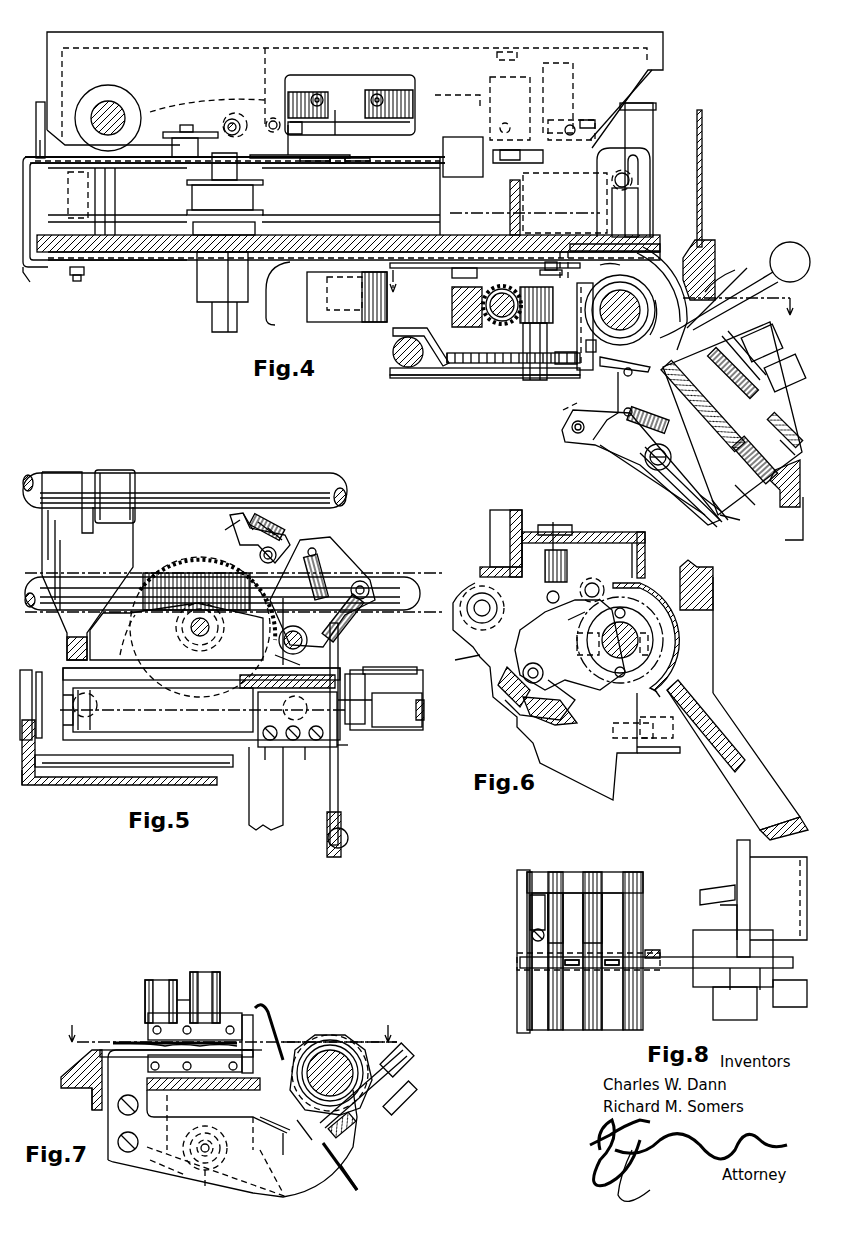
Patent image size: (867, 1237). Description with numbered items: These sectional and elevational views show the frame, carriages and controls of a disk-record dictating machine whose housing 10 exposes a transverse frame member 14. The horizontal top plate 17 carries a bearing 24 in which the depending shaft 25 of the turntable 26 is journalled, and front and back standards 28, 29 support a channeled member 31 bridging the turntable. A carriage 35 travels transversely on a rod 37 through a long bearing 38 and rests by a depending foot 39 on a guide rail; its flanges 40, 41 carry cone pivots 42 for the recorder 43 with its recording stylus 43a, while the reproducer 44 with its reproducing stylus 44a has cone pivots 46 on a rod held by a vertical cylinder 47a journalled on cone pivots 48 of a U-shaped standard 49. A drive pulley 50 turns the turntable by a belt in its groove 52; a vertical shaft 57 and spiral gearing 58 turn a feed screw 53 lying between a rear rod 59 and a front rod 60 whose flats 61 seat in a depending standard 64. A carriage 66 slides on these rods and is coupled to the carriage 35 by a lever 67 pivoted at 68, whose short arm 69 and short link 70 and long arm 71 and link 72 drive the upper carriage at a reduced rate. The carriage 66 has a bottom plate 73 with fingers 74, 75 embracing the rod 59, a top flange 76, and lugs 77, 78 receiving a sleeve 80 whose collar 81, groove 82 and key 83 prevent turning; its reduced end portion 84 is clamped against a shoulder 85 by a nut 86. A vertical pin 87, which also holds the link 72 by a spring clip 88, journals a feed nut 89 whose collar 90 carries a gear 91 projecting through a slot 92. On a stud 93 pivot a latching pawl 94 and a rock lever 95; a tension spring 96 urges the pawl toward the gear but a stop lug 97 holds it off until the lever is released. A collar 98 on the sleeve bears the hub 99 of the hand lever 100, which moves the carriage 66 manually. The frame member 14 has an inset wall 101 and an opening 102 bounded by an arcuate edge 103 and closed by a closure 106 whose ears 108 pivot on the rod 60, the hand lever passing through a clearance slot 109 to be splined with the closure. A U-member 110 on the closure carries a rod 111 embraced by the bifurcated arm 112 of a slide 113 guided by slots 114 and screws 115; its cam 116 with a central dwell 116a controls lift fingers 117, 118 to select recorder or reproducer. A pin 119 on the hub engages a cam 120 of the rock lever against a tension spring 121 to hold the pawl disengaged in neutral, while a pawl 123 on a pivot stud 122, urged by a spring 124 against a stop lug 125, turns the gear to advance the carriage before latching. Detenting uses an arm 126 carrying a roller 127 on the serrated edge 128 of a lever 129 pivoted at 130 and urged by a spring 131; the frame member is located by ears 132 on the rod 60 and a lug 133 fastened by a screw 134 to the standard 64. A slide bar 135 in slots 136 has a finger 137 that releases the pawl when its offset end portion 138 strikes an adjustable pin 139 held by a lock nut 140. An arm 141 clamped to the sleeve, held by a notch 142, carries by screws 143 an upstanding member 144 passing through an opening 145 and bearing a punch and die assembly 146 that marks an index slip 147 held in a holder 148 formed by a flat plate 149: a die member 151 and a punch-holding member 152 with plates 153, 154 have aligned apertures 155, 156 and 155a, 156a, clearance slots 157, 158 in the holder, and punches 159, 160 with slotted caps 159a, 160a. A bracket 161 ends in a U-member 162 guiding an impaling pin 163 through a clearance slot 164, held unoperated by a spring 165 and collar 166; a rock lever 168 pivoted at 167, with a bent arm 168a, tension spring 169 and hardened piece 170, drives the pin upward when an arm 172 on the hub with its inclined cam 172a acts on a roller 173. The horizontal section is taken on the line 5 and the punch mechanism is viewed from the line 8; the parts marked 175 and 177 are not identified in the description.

In FIG. 4, the housing 10 is at (707, 146).
In FIG. 4, the transverse frame member 14 is at (705, 239).
In FIG. 6, the transverse frame member 14 is at (722, 579).
In FIG. 7, the transverse frame member 14 is at (63, 1077).
In FIG. 4, the top plate 17 is at (179, 260).
In FIG. 6, the top plate 17 is at (496, 508).
In FIG. 4, the bearing 24 is at (307, 305).
In FIG. 4, the depending shaft 25 is at (327, 282).
In FIG. 4, the turntable 26 is at (166, 222).
In FIG. 4, the front standard 28 is at (648, 118).
In FIG. 4, the back standard 29 is at (29, 134).
In FIG. 4, the channeled member 31 is at (38, 100).
In FIG. 4, the carriage 35 is at (109, 24).
In FIG. 4, the transverse rod 37 is at (114, 110).
In FIG. 4, the long bearing 38 is at (104, 88).
In FIG. 4, the depending foot 39 is at (480, 167).
In FIG. 4, the depending flange 40 is at (632, 84).
In FIG. 4, the flange 41 is at (265, 48).
In FIG. 4, the cone pivots 42 is at (226, 122).
In FIG. 4, the recorder 43 is at (225, 95).
In FIG. 4, the recording stylus 43a is at (331, 168).
In FIG. 4, the reproducer 44 is at (445, 99).
In FIG. 4, the reproducing stylus 44a is at (359, 163).
In FIG. 4, the cone pivots 46 is at (501, 118).
In FIG. 4, the vertical cylinder 47a is at (490, 90).
In FIG. 4, the cone pivots 48 is at (500, 156).
In FIG. 4, the U-shaped standard 49 is at (545, 80).
In FIG. 4, the drive pulley 50 is at (258, 198).
In FIG. 4, the groove 52 is at (338, 175).
In FIG. 4, the feed screw 53 is at (452, 300).
In FIG. 5, the feed screw 53 is at (165, 572).
In FIG. 4, the vertical shaft 57 is at (462, 275).
In FIG. 4, the spiral gearing 58 is at (488, 311).
In FIG. 4, the rod 59 is at (393, 353).
In FIG. 5, the rod 59 is at (180, 473).
In FIG. 4, the rod 60 is at (606, 262).
In FIG. 5, the rod 60 is at (400, 740).
In FIG. 7, the rod 60 is at (345, 1045).
In FIG. 8, the rod 60 is at (725, 1005).
In FIG. 6, the flats 61 is at (618, 675).
In FIG. 6, the depending standard 64 is at (576, 765).
In FIG. 4, the carriage 66 is at (439, 396).
In FIG. 5, the carriage 66 is at (61, 648).
In FIG. 4, the lever 67 is at (25, 272).
In FIG. 4, the pivot 68 is at (78, 281).
In FIG. 4, the short lever arm 69 is at (142, 165).
In FIG. 4, the short link 70 is at (178, 132).
In FIG. 4, the long lever arm 71 is at (281, 297).
In FIG. 4, the link 72 is at (498, 235).
In FIG. 4, the bottom plate 73 is at (490, 378).
In FIG. 5, the bottom plate 73 is at (120, 547).
In FIG. 7, the bottom plate 73 is at (360, 1188).
In FIG. 4, the finger 74 is at (390, 372).
In FIG. 5, the finger 74 is at (52, 470).
In FIG. 4, the finger 75 is at (393, 333).
In FIG. 5, the finger 75 is at (116, 470).
In FIG. 4, the top flange 76 is at (572, 252).
In FIG. 5, the top flange 76 is at (108, 625).
In FIG. 7, the top flange 76 is at (408, 1095).
In FIG. 4, the lug 77 is at (633, 310).
In FIG. 5, the lug 77 is at (38, 785).
In FIG. 5, the lug 78 is at (348, 752).
In FIG. 8, the lug 78 is at (702, 966).
In FIG. 4, the sleeve 80 is at (620, 310).
In FIG. 5, the sleeve 80 is at (178, 732).
In FIG. 5, the collar 81 is at (72, 733).
In FIG. 5, the groove 82 is at (80, 705).
In FIG. 4, the key 83 is at (591, 312).
In FIG. 5, the key 83 is at (202, 710).
In FIG. 5, the reduced-diameter end portion 84 is at (352, 672).
In FIG. 7, the reduced-diameter end portion 84 is at (335, 1058).
In FIG. 5, the shoulder 85 is at (350, 660).
In FIG. 5, the nut 86 is at (350, 750).
In FIG. 7, the nut 86 is at (352, 1082).
In FIG. 8, the nut 86 is at (705, 987).
In FIG. 4, the vertical pin 87 is at (542, 235).
In FIG. 5, the vertical pin 87 is at (190, 628).
In FIG. 4, the spring clip 88 is at (551, 261).
In FIG. 4, the feed nut 89 is at (530, 322).
In FIG. 5, the feed nut 89 is at (205, 640).
In FIG. 4, the collar 90 is at (478, 368).
In FIG. 4, the gear 91 is at (462, 375).
In FIG. 5, the gear 91 is at (190, 560).
In FIG. 5, the slot 92 is at (115, 638).
In FIG. 5, the stud 93 is at (295, 635).
In FIG. 5, the latching pawl 94 is at (312, 545).
In FIG. 4, the rock lever 95 is at (570, 362).
In FIG. 5, the rock lever 95 is at (230, 520).
In FIG. 5, the tension spring 96 is at (325, 560).
In FIG. 5, the stop lug 97 is at (352, 585).
In FIG. 5, the collar 98 is at (258, 718).
In FIG. 4, the hub 99 is at (615, 236).
In FIG. 5, the hub 99 is at (268, 665).
In FIG. 5, the hand lever 100 is at (250, 802).
In FIG. 7, the hand lever 100 is at (287, 1040).
In FIG. 4, the inset wall 101 is at (712, 400).
In FIG. 6, the inset wall 101 is at (722, 712).
In FIG. 7, the inset wall 101 is at (240, 1091).
In FIG. 4, the opening 102 is at (718, 262).
In FIG. 4, the edge 103 is at (720, 278).
In FIG. 6, the edge 103 is at (690, 645).
In FIG. 4, the closure 106 is at (663, 256).
In FIG. 5, the closure 106 is at (140, 767).
In FIG. 6, the closure 106 is at (680, 665).
In FIG. 5, the apertured ears 108 is at (30, 785).
In FIG. 6, the apertured ears 108 is at (628, 700).
In FIG. 4, the clearance slot 109 is at (722, 290).
In FIG. 4, the U-member 110 is at (628, 205).
In FIG. 4, the transverse rod 111 is at (631, 180).
In FIG. 4, the bifurcated arm 112 is at (640, 165).
In FIG. 4, the slide 113 is at (592, 113).
In FIG. 4, the slots 114 is at (292, 150).
In FIG. 4, the headed mounting screws 115 is at (578, 142).
In FIG. 4, the cam 116 is at (350, 105).
In FIG. 4, the central dwell 116a is at (348, 112).
In FIG. 4, the lift finger 117 is at (318, 94).
In FIG. 4, the lift finger 118 is at (380, 94).
In FIG. 4, the pin 119 is at (628, 367).
In FIG. 5, the pin 119 is at (268, 760).
In FIG. 5, the cam 120 is at (282, 735).
In FIG. 8, the cam 120 is at (705, 897).
In FIG. 5, the tension spring 121 is at (395, 578).
In FIG. 5, the pivot stud 122 is at (270, 522).
In FIG. 5, the pawl 123 is at (245, 512).
In FIG. 5, the tension spring 124 is at (280, 525).
In FIG. 5, the stop lug 125 is at (262, 515).
In FIG. 6, the arm 126 is at (608, 640).
In FIG. 6, the roller 127 is at (478, 658).
In FIG. 6, the serrated edge 128 is at (530, 703).
In FIG. 6, the lever 129 is at (507, 672).
In FIG. 6, the pivot 130 is at (492, 610).
In FIG. 6, the spring 131 is at (568, 565).
In FIG. 5, the apertured ears 132 is at (28, 670).
In FIG. 6, the apertured ears 132 is at (660, 575).
In FIG. 6, the lug 133 is at (640, 753).
In FIG. 6, the screw 134 is at (655, 735).
In FIG. 4, the slide bar 135 is at (520, 366).
In FIG. 5, the slide bar 135 is at (152, 668).
In FIG. 7, the slide bar 135 is at (352, 1122).
In FIG. 8, the slide bar 135 is at (735, 837).
In FIG. 4, the slots 136 is at (599, 347).
In FIG. 5, the slots 136 is at (201, 678).
In FIG. 7, the slots 136 is at (306, 1135).
In FIG. 8, the depending finger 137 is at (733, 921).
In FIG. 5, the offset end portion 138 is at (410, 697).
In FIG. 7, the offset end portion 138 is at (405, 1063).
In FIG. 8, the offset end portion 138 is at (783, 1008).
In FIG. 6, the stationary pin 139 is at (595, 583).
In FIG. 6, the lock nut 140 is at (574, 612).
In FIG. 4, the arm 141 is at (636, 384).
In FIG. 5, the arm 141 is at (338, 812).
In FIG. 7, the arm 141 is at (270, 1122).
In FIG. 8, the arm 141 is at (662, 968).
In FIG. 7, the notch 142 is at (350, 1160).
In FIG. 5, the screws 143 is at (348, 840).
In FIG. 7, the screws 143 is at (118, 1140).
In FIG. 8, the screws 143 is at (535, 978).
In FIG. 5, the upstanding member 144 is at (327, 845).
In FIG. 7, the upstanding member 144 is at (118, 1067).
In FIG. 4, the opening 145 is at (800, 542).
In FIG. 7, the opening 145 is at (92, 1102).
In FIG. 7, the punch and die assembly 146 is at (239, 1008).
In FIG. 4, the index slip 147 is at (789, 425).
In FIG. 4, the holder 148 is at (784, 508).
In FIG. 7, the holder 148 is at (113, 1034).
In FIG. 8, the holder 148 is at (637, 867).
In FIG. 8, the flat plate 149 is at (582, 880).
In FIG. 7, the die member 151 is at (260, 1056).
In FIG. 4, the punch-holding member 152 is at (722, 336).
In FIG. 7, the punch-holding member 152 is at (262, 1022).
In FIG. 7, the plate 153 is at (190, 1090).
In FIG. 7, the plate 154 is at (184, 1010).
In FIG. 7, the aperture 155 is at (245, 1013).
In FIG. 8, the aperture 155a is at (613, 1000).
In FIG. 7, the aperture 156 is at (145, 1033).
In FIG. 8, the aperture 156a is at (572, 1000).
In FIG. 8, the slot 157 is at (618, 920).
In FIG. 8, the slot 158 is at (580, 935).
In FIG. 7, the punch 159 is at (222, 1000).
In FIG. 4, the slotted cap 159a is at (762, 343).
In FIG. 7, the slotted cap 159a is at (212, 985).
In FIG. 7, the punch 160 is at (165, 980).
In FIG. 4, the slotted cap 160a is at (785, 373).
In FIG. 7, the slotted cap 160a is at (155, 980).
In FIG. 4, the bracket 161 is at (695, 398).
In FIG. 8, the bracket 161 is at (612, 952).
In FIG. 4, the U-member 162 is at (748, 505).
In FIG. 4, the impaling pin 163 is at (700, 502).
In FIG. 8, the impaling pin 163 is at (532, 935).
In FIG. 8, the clearance slot 164 is at (535, 905).
In FIG. 4, the spring 165 is at (732, 432).
In FIG. 4, the collar 166 is at (671, 461).
In FIG. 4, the pivot 167 is at (660, 470).
In FIG. 7, the pivot 167 is at (212, 1152).
In FIG. 4, the rock lever 168 is at (606, 462).
In FIG. 7, the rock lever 168 is at (240, 1194).
In FIG. 4, the forwardly-extending arm 168a is at (728, 522).
In FIG. 7, the forwardly-extending arm 168a is at (180, 1178).
In FIG. 4, the tension spring 169 is at (652, 433).
In FIG. 4, the hardened piece 170 is at (712, 518).
In FIG. 4, the arm 172 is at (618, 405).
In FIG. 5, the arm 172 is at (305, 760).
In FIG. 7, the arm 172 is at (284, 1140).
In FIG. 4, the inclined cam 172a is at (612, 462).
In FIG. 4, the roller 173 is at (570, 442).
In FIG. 7, the roller 173 is at (280, 1190).
In FIG. 4, the spring 175 is at (726, 350).
In FIG. 4, the contact 177 is at (799, 435).
In FIG. 4, the section line 5— 5 is at (591, 303).
In FIG. 7, the line 8— 8 is at (230, 1023).